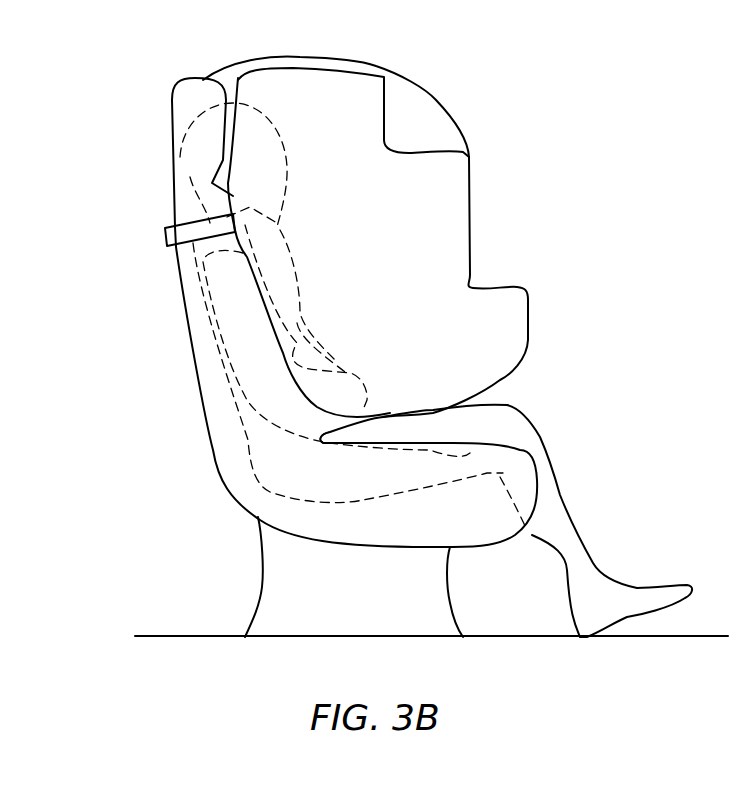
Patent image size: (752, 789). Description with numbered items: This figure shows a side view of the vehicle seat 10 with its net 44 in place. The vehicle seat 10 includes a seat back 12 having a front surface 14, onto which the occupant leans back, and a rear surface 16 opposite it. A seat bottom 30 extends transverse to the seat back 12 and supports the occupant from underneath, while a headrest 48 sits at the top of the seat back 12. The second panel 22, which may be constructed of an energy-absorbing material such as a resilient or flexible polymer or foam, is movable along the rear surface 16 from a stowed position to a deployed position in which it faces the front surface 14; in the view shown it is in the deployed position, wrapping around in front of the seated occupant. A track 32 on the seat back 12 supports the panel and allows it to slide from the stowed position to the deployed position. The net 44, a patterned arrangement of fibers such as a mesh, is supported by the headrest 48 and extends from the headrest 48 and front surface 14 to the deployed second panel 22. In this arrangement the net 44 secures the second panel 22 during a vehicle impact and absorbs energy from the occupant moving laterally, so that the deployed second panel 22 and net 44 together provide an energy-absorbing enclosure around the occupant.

The vehicle seat 10 is at (50, 70).
The seat back 12 is at (172, 100).
The front surface 14 is at (230, 118).
The rear surface 16 is at (170, 170).
The second panel 22 is at (464, 205).
The seat bottom 30 is at (245, 485).
The track 32 is at (167, 237).
The net 44 is at (436, 100).
The headrest 48 is at (192, 95).